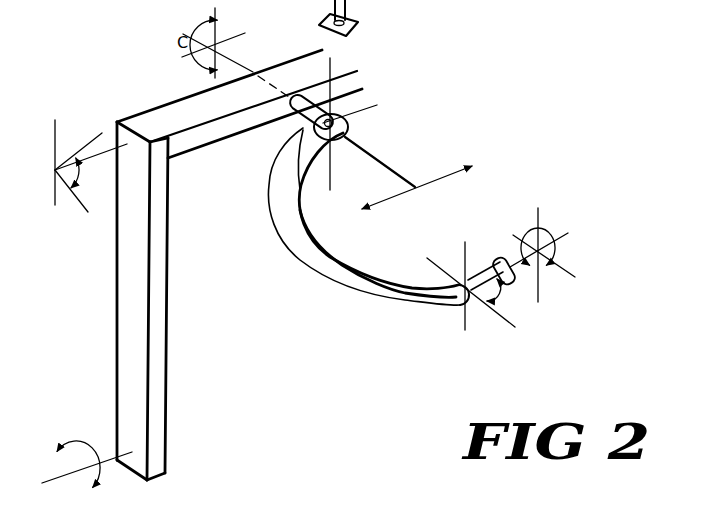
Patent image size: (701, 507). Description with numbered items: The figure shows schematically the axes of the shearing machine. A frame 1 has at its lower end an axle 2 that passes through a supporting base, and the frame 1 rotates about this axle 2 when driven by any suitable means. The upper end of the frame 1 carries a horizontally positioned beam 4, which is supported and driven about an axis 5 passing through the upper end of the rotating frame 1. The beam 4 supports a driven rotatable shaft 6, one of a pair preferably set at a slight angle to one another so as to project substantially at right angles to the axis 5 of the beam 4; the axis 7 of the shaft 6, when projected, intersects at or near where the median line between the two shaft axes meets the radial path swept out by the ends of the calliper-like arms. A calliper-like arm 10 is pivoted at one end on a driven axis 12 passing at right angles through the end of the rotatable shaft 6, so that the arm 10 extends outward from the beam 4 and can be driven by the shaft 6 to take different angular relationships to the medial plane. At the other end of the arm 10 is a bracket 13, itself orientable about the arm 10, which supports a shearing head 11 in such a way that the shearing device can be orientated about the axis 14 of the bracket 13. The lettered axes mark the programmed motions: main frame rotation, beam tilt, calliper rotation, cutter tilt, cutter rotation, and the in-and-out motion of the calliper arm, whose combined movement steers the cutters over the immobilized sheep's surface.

The frame 1 is at (125, 320).
The axle 2 is at (112, 457).
The horizontally positioned beam 4 is at (182, 112).
The axis 5 is at (110, 148).
The driven rotatable shaft 6 is at (288, 140).
The axis of shaft 7 is at (375, 150).
The calliper-like arm 10 is at (335, 263).
The shearing head 11 is at (508, 282).
The driven axis 12 is at (331, 176).
The bracket 13 is at (485, 272).
The axis of bracket 14 is at (557, 240).